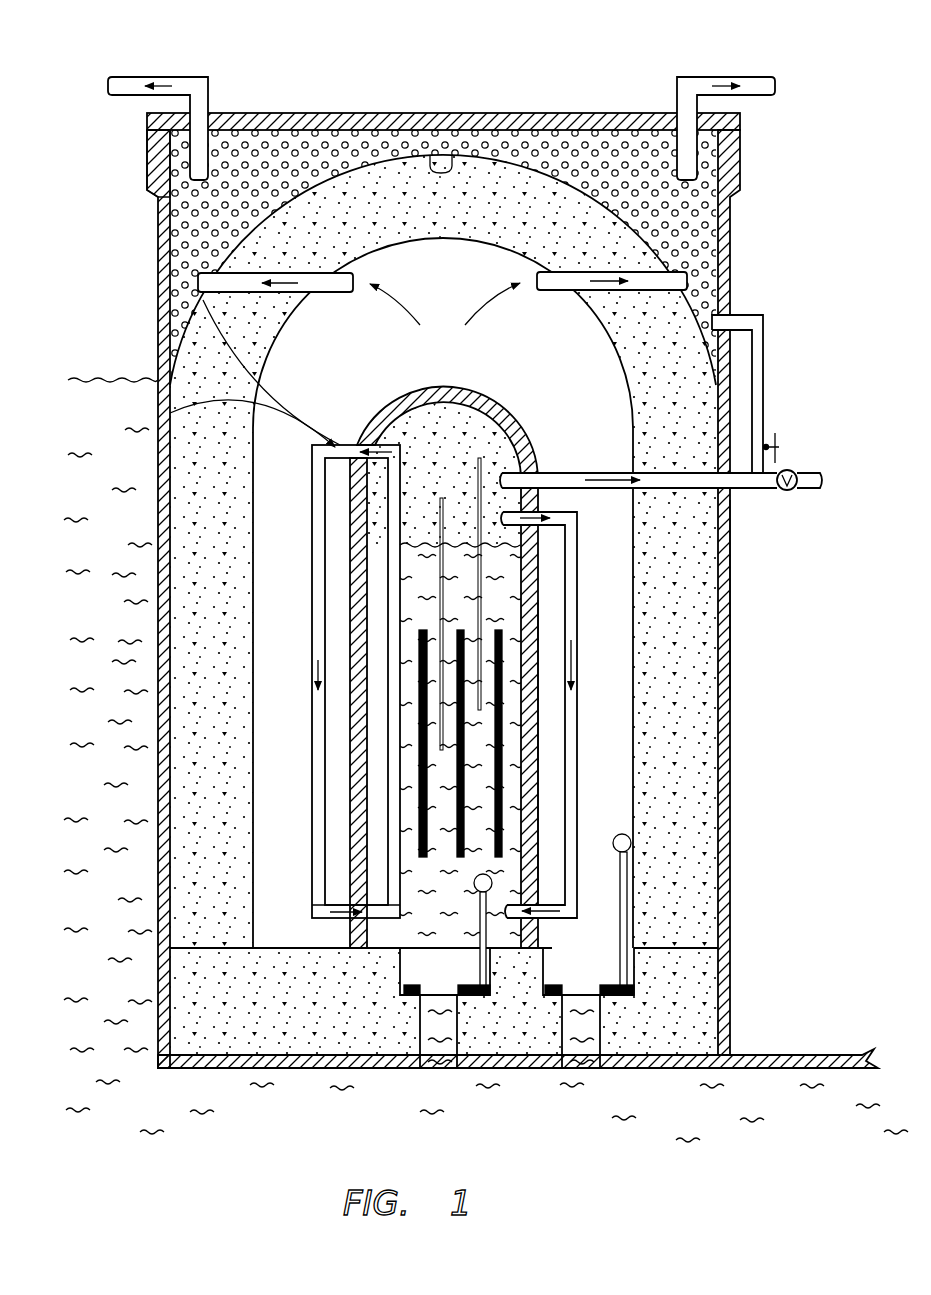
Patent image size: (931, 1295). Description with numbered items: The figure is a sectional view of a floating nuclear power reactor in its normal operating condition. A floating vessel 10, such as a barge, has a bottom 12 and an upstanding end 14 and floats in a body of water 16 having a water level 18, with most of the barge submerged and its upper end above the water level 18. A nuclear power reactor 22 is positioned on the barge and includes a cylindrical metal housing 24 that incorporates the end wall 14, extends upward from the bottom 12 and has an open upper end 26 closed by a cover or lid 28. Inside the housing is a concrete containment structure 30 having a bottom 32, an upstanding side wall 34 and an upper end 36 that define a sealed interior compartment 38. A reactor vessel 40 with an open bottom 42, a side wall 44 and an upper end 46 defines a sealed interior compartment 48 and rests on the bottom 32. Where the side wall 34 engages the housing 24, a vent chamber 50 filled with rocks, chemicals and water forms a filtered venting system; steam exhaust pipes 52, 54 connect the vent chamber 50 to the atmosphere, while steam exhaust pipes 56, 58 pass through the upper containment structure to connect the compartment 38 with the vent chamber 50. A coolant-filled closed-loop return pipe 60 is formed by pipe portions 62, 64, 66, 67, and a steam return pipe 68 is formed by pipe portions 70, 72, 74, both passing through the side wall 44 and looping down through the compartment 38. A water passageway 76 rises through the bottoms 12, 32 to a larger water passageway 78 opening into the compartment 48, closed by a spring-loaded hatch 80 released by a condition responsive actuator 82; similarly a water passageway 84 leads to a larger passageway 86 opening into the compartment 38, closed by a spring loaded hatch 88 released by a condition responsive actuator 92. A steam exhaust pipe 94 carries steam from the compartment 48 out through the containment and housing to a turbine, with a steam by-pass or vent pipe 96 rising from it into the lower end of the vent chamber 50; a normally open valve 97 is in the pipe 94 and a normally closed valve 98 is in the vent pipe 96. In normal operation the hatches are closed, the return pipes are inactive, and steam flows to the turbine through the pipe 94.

The floating vessel 10 is at (634, 72).
The bottom 12 is at (803, 1055).
The end 14 is at (157, 735).
The body of water 16 is at (486, 785).
The water level 18 is at (120, 377).
The nuclear power reactor 22 is at (733, 268).
The cylindrical metal housing 24 is at (733, 590).
The open upper end 26 is at (150, 128).
The cover or lid 28 is at (380, 113).
The containment structure 30 is at (537, 413).
The bottom 32 is at (444, 1001).
The upstanding side wall 34 is at (685, 745).
The upper end 36 is at (441, 154).
The sealed interior compartment 38 is at (443, 593).
The reactor vessel 40 is at (683, 390).
The open bottom 42 is at (640, 900).
The side wall 44 is at (532, 733).
The upper end 46 is at (452, 380).
The sealed interior compartment 48 is at (458, 443).
The vent chamber 50 is at (578, 140).
The steam exhaust pipe 52 is at (195, 75).
The steam exhaust pipe 54 is at (745, 76).
The steam exhaust pipe 56 is at (196, 270).
The steam exhaust pipe 58 is at (665, 262).
The return pipe 60 is at (170, 415).
The pipe portion 62 is at (215, 290).
The pipe portion 64 is at (318, 570).
The pipe portion 66 is at (318, 913).
The pipe portion 67 is at (393, 577).
The steam return pipe 68 is at (584, 668).
The pipe portion 70 is at (738, 489).
The pipe portion 72 is at (578, 630).
The pipe portion 74 is at (553, 905).
The water passageway 76 is at (420, 1070).
The water passageway 78 is at (412, 963).
The spring-loaded hatch 80 is at (427, 997).
The condition responsive actuator 82 is at (486, 990).
The water passageway 84 is at (590, 1056).
The passageway 86 is at (575, 1062).
The spring loaded hatch 88 is at (575, 983).
The condition responsive actuator 92 is at (633, 845).
The steam exhaust pipe 94 is at (790, 491).
The steam by-pass or vent pipe 96 is at (763, 322).
The normally open valve 97 is at (816, 490).
The normally closed valve 98 is at (780, 447).